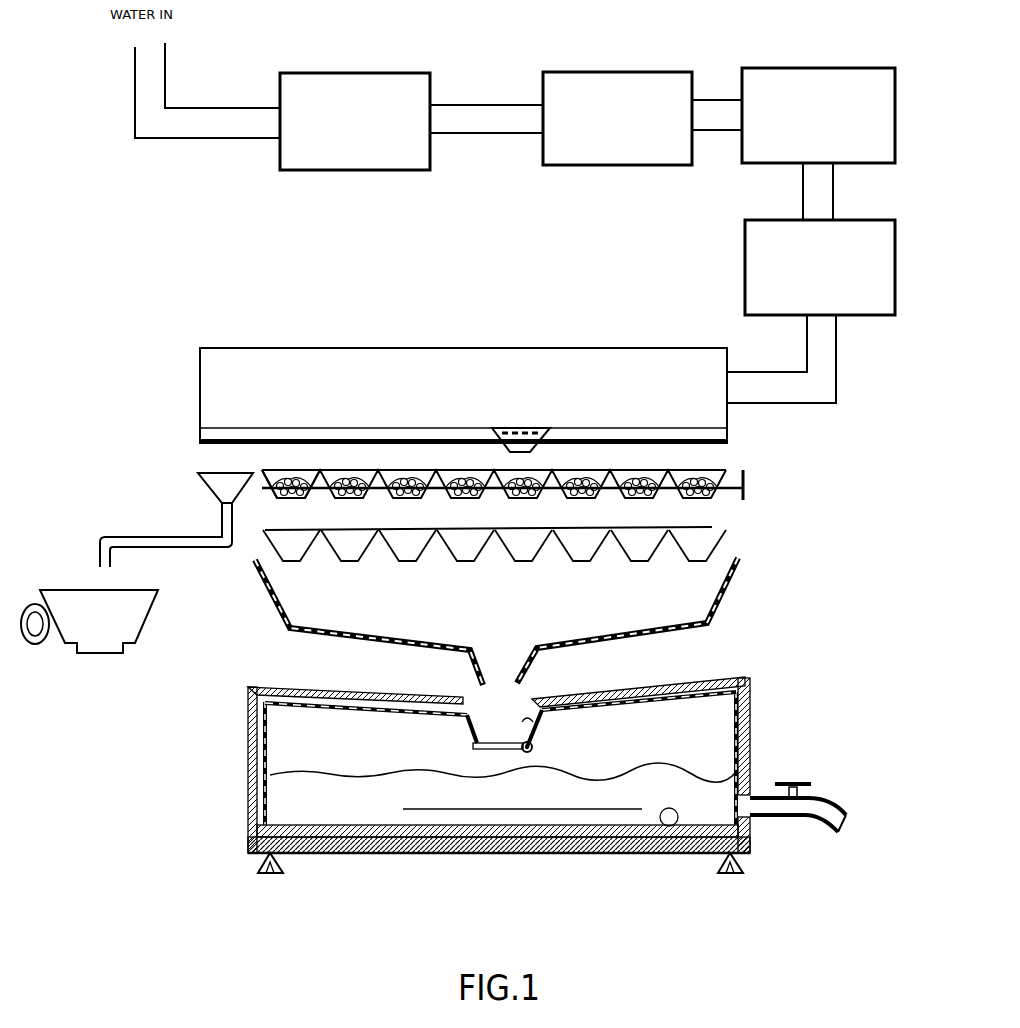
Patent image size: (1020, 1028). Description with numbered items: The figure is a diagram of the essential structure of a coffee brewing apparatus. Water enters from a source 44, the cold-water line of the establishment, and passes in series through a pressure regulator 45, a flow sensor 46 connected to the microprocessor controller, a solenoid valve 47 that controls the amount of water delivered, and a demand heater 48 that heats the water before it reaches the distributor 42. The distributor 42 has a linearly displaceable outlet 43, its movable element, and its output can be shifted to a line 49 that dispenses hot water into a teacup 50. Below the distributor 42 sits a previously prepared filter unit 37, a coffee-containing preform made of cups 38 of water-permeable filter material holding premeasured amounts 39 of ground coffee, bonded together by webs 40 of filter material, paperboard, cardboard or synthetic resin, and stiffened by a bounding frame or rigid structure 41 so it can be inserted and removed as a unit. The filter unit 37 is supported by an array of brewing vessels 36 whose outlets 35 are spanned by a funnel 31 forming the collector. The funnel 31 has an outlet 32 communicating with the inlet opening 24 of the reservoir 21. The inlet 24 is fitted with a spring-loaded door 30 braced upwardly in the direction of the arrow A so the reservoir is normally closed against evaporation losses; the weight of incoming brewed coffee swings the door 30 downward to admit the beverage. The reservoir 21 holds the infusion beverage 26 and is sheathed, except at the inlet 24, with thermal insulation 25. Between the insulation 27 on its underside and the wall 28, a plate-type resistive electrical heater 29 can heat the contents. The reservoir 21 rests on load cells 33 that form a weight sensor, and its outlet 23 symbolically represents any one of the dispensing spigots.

The reservoir 21 is at (752, 728).
The outlet 23 is at (815, 797).
The inlet opening 24 is at (545, 715).
The thermal insulation 25 is at (752, 700).
The infusion beverage 26 is at (312, 775).
The insulation 27 is at (575, 853).
The wall 28 is at (665, 853).
The plate-type resistive electrical heater 29 is at (447, 853).
The spring-loaded door 30 is at (495, 742).
The funnel 31 is at (727, 592).
The outlet 32 is at (523, 655).
The load cells 33 is at (268, 874).
The outlets 35 is at (290, 565).
The brewing vessels 36 is at (710, 523).
The filter unit 37 is at (762, 456).
The cups 38 is at (718, 478).
The premeasured amounts of ground coffee 39 is at (280, 487).
The webs 40 is at (670, 486).
The bounding frame or rigid structure 41 is at (750, 490).
The distributor 42 is at (448, 357).
The linearly displaceable outlet 43 is at (537, 423).
The source 44 is at (165, 60).
The pressure regulator 45 is at (358, 88).
The flow sensor 46 is at (603, 77).
The solenoid valve 47 is at (820, 72).
The demand heater 48 is at (745, 265).
The line 49 is at (205, 493).
The teacup 50 is at (136, 617).
The arrow A is at (530, 766).